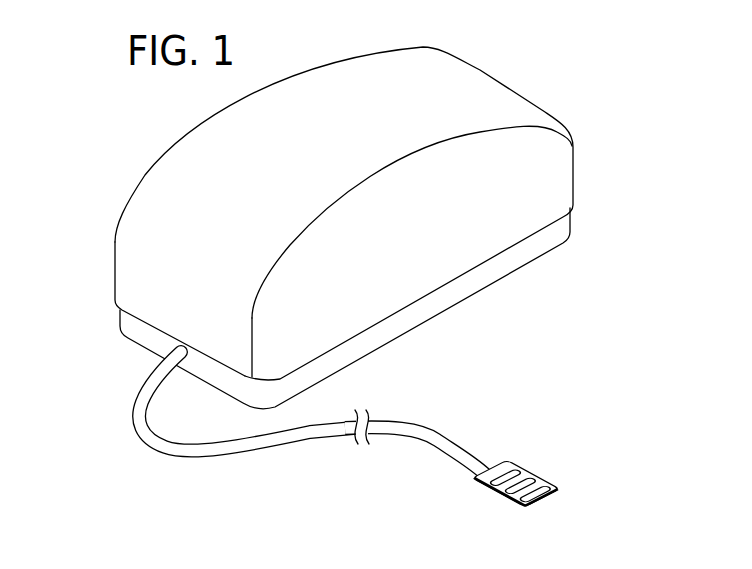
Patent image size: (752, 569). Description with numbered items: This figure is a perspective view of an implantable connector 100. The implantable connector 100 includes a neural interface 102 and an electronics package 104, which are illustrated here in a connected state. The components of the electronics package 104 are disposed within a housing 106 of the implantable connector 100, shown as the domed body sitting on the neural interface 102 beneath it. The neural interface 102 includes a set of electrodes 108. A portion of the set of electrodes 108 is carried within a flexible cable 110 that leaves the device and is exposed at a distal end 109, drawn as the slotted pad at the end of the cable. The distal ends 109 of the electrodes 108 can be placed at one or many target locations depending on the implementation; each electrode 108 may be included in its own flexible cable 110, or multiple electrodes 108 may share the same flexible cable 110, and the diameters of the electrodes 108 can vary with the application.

The implantable connector 100 is at (369, 264).
The neural interface 102 is at (559, 285).
The electronics package 104 is at (614, 151).
The housing 106 is at (137, 253).
The set of electrodes 108 is at (271, 434).
The distal end 109 is at (545, 473).
The flexible cable 110 is at (227, 447).